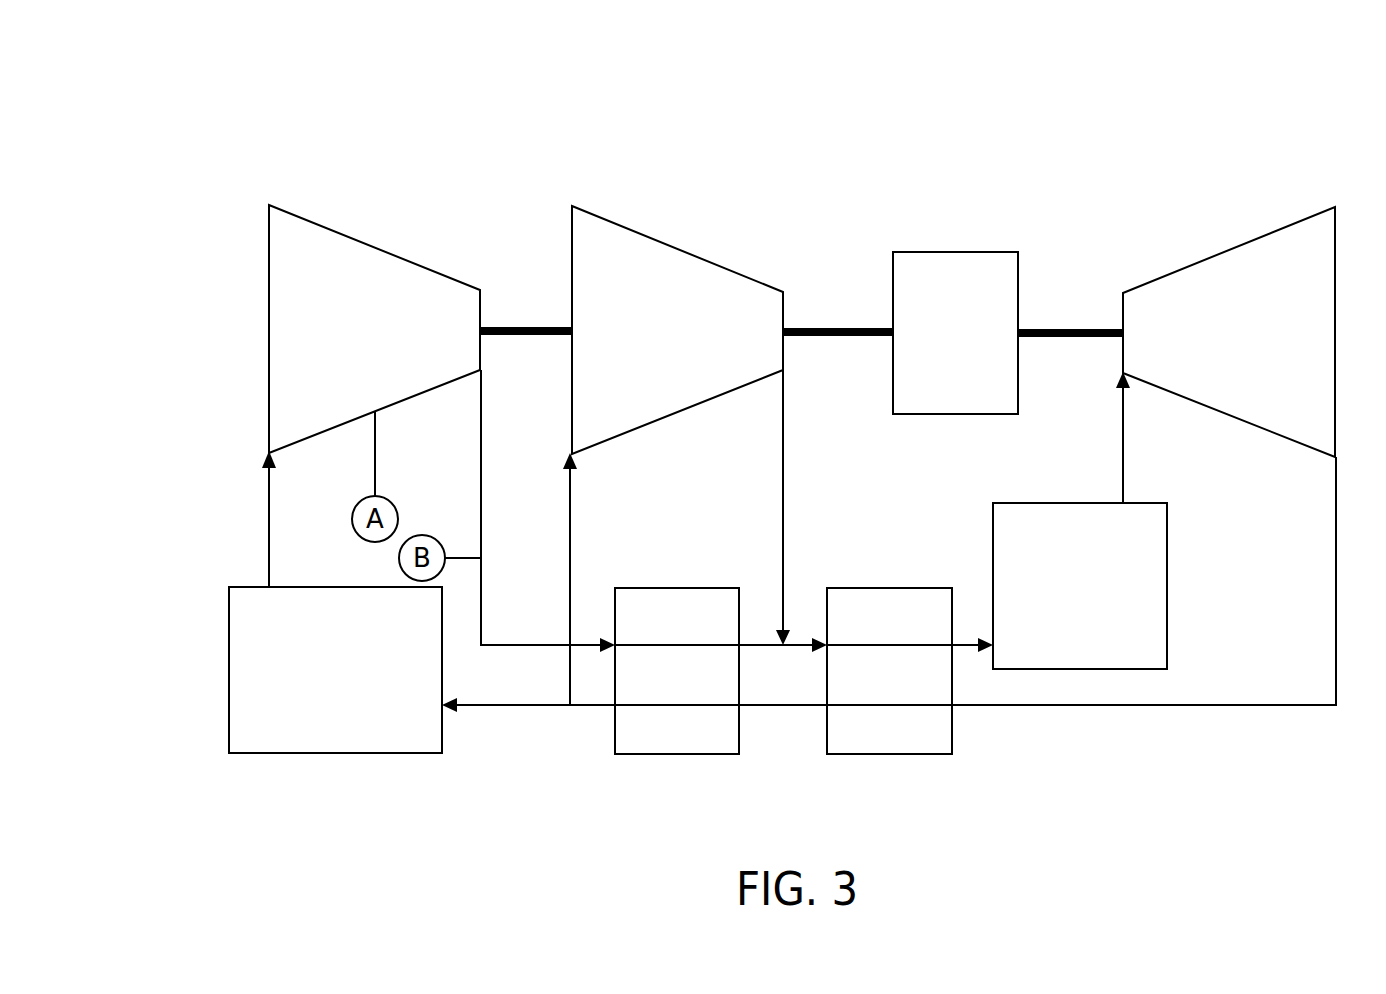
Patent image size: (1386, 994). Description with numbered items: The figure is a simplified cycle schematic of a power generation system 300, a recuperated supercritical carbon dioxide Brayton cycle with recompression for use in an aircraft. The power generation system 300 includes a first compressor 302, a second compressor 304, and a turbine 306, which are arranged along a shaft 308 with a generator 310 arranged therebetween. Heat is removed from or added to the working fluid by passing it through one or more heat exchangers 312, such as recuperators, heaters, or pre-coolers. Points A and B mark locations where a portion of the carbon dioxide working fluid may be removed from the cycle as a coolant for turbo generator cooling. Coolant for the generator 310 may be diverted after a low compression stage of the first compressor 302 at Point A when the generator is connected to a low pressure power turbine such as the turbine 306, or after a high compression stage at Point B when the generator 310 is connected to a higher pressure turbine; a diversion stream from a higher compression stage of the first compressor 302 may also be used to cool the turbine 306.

The power generation system 300 is at (268, 108).
The first compressor 302 is at (331, 363).
The second compressor 304 is at (631, 355).
The turbine 306 is at (1213, 342).
The shaft 308 is at (522, 327).
The generator 310 is at (928, 348).
The heat exchanger 312 is at (291, 695).